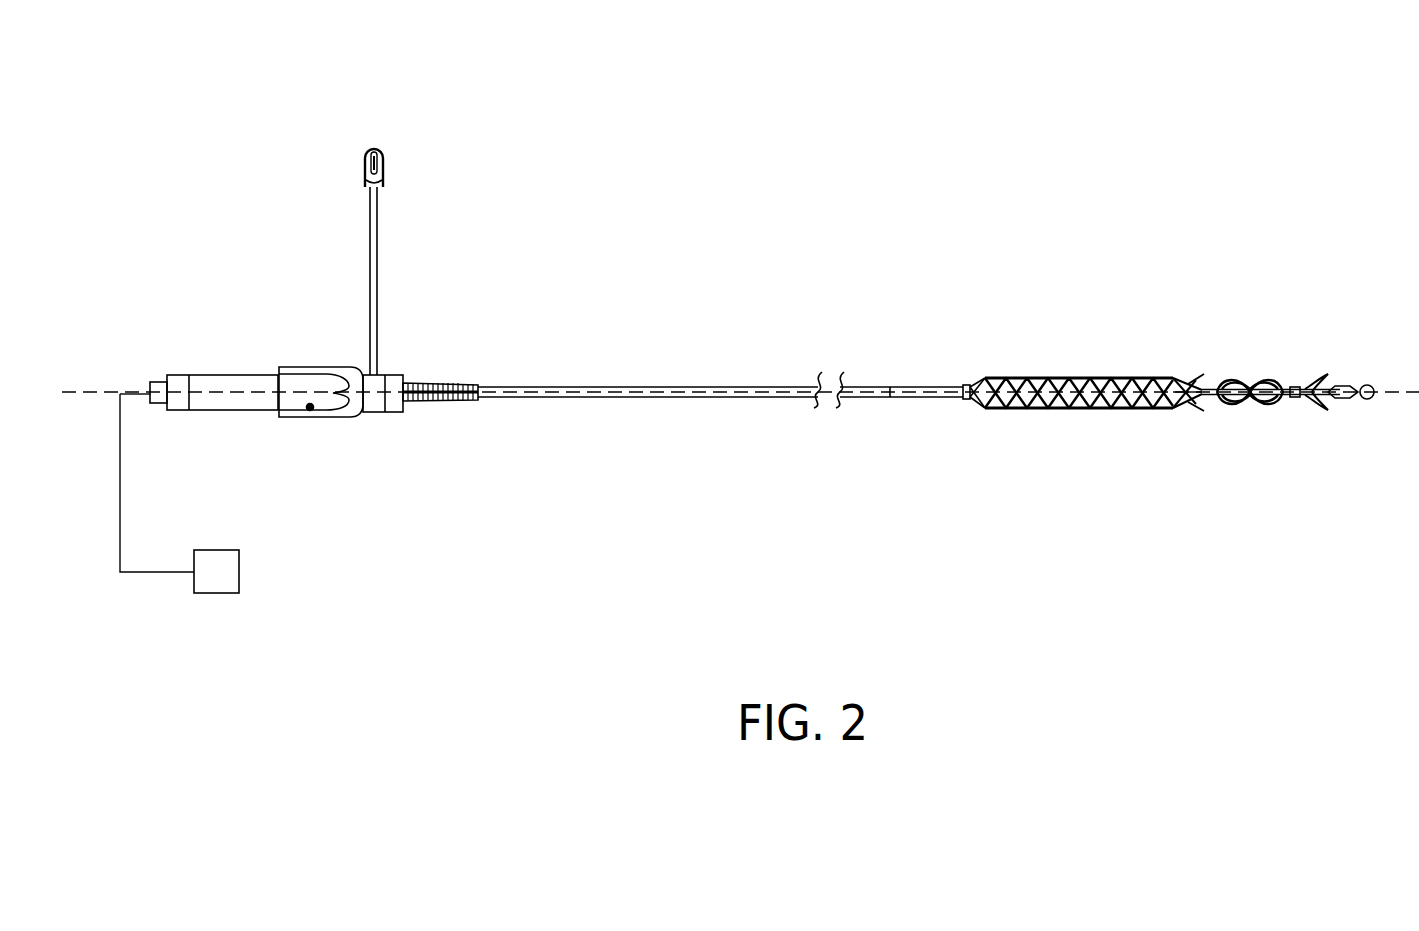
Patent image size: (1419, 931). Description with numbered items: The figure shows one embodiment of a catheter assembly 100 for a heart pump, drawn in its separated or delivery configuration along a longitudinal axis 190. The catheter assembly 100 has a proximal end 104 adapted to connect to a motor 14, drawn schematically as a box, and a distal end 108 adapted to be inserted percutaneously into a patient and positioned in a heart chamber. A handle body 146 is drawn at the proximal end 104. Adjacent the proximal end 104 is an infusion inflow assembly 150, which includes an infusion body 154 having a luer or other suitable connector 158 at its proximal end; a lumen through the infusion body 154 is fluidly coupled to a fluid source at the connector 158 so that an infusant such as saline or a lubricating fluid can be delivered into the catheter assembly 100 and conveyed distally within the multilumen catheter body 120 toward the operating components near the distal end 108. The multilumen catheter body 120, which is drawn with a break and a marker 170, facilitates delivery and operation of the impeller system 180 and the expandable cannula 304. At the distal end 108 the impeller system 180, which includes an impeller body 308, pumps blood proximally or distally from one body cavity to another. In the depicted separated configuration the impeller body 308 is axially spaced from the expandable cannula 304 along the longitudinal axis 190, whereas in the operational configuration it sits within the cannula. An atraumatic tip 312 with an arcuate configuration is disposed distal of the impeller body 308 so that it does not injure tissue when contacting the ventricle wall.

The catheter assembly 100 is at (350, 115).
The proximal end 104 is at (190, 298).
The handle body 146 is at (230, 403).
The motor 14 is at (232, 585).
The infusion inflow assembly 150 is at (322, 224).
The infusion body 154 is at (370, 272).
The connector 158 is at (385, 153).
The multilumen catheter body 120 is at (567, 394).
The marker 170 is at (907, 398).
The expandable cannula 304 is at (1091, 352).
The distal end 108 is at (1224, 333).
The impeller body 308 is at (1250, 400).
The impeller system 180 is at (1288, 357).
The atraumatic tip 312 is at (1343, 398).
The longitudinal axis 190 is at (1397, 383).